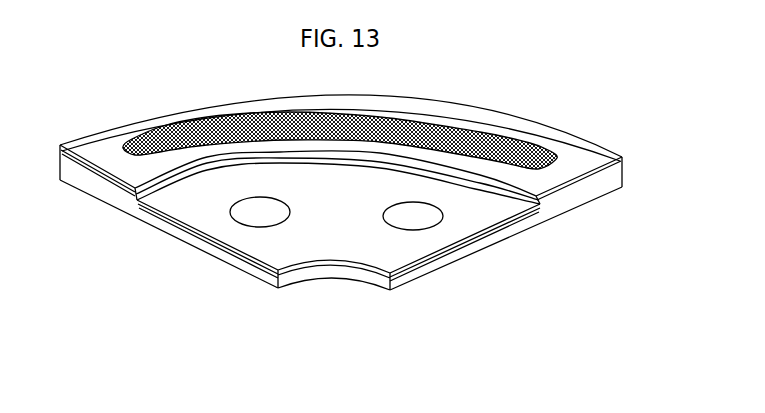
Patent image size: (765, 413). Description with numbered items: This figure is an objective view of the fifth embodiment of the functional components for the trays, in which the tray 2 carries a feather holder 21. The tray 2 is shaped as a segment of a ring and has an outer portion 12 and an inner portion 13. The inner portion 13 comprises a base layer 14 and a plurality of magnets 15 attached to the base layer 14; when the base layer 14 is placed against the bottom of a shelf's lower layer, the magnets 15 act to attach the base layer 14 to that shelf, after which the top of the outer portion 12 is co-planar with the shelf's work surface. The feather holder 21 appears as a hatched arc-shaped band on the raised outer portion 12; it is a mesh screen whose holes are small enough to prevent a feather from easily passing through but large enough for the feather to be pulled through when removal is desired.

The tray 2 is at (367, 203).
The outer portion 12 is at (59, 180).
The inner portion 13 is at (506, 238).
The base layer 14 is at (398, 302).
The magnets 15 is at (396, 228).
The feather holder 21 is at (203, 127).